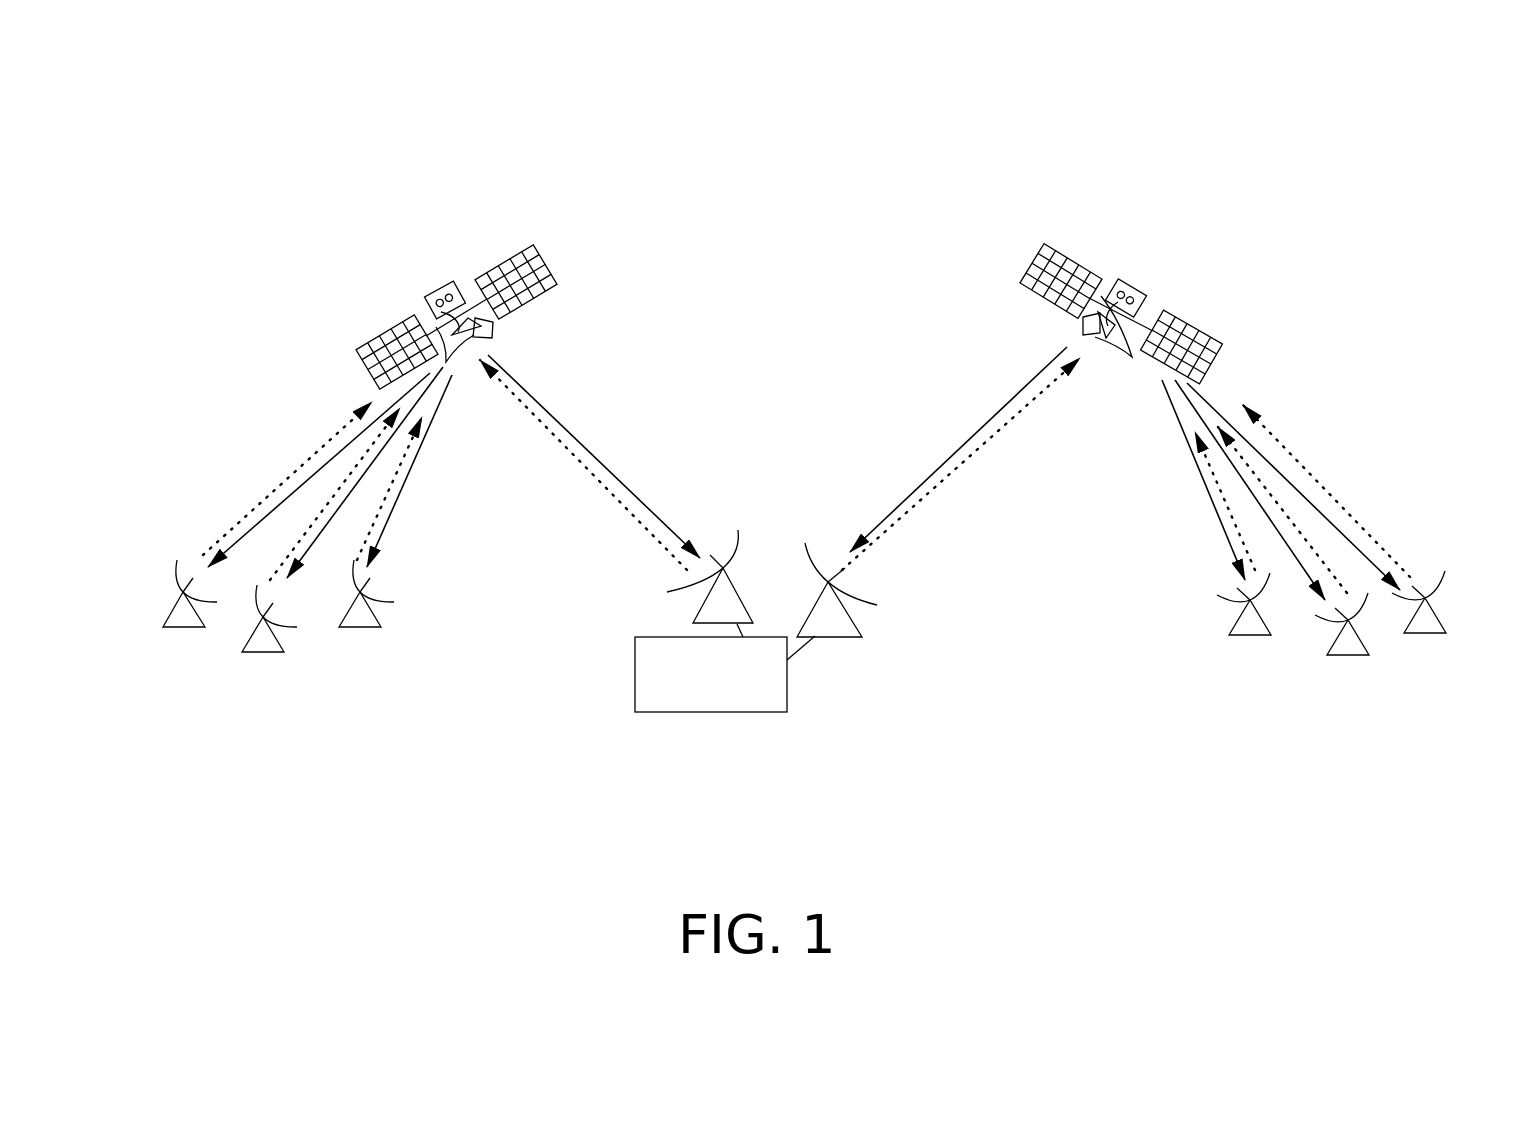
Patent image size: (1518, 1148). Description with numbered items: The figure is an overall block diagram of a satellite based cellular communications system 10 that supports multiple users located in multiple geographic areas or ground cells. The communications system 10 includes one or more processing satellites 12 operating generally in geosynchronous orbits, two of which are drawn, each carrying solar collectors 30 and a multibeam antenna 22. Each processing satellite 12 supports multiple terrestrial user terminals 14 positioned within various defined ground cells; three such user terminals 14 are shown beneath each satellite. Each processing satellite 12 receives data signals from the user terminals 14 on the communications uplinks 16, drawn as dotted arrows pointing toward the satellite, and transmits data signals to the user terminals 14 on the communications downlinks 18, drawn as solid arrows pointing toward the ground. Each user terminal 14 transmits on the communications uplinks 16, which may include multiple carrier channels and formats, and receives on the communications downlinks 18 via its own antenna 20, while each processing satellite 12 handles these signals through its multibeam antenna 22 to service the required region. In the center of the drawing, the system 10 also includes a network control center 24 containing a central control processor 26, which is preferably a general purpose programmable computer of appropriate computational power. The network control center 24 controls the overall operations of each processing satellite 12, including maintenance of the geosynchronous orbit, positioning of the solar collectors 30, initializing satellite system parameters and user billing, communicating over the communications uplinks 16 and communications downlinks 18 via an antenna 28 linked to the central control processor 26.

The communications system 10 is at (985, 180).
The processing satellite 12 is at (452, 288).
The user terminal 14 is at (370, 617).
The communications uplink 16 is at (260, 503).
The communications downlink 18 is at (412, 472).
The antenna 20 is at (377, 592).
The multibeam antenna 22 is at (478, 338).
The network control center 24 is at (638, 758).
The central control processor 26 is at (738, 712).
The antenna 28 is at (735, 535).
The solar collector 30 is at (535, 250).